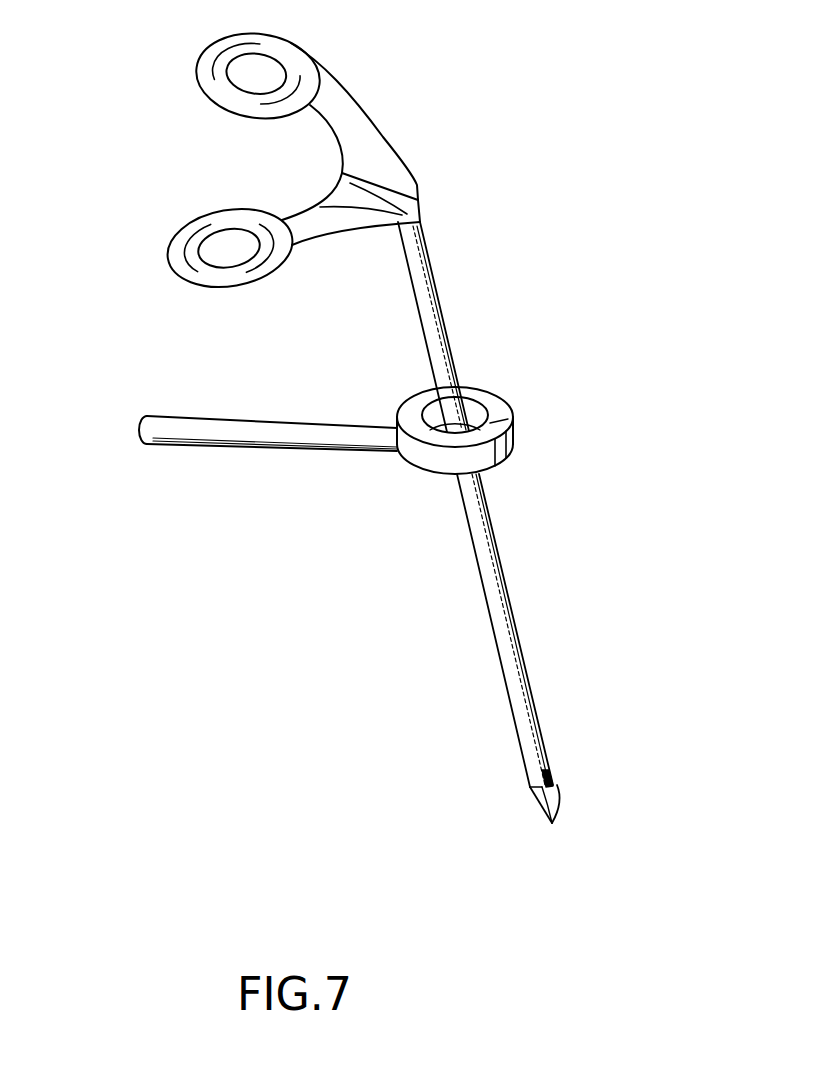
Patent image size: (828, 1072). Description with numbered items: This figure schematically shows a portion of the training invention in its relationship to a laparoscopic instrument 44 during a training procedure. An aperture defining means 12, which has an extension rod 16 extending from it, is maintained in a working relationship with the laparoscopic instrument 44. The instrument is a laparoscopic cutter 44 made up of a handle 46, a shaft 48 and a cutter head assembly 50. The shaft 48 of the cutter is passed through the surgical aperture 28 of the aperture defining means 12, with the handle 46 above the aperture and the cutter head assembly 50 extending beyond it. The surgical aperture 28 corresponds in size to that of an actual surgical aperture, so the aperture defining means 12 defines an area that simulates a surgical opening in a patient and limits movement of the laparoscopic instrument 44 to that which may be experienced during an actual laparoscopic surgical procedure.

The aperture defining means 12 is at (443, 465).
The extension rod 16 is at (250, 430).
The surgical aperture 28 is at (432, 413).
The laparoscopic instrument 44 is at (437, 218).
The handle 46 is at (363, 133).
The shaft 48 is at (430, 318).
The cutter head assembly 50 is at (533, 805).